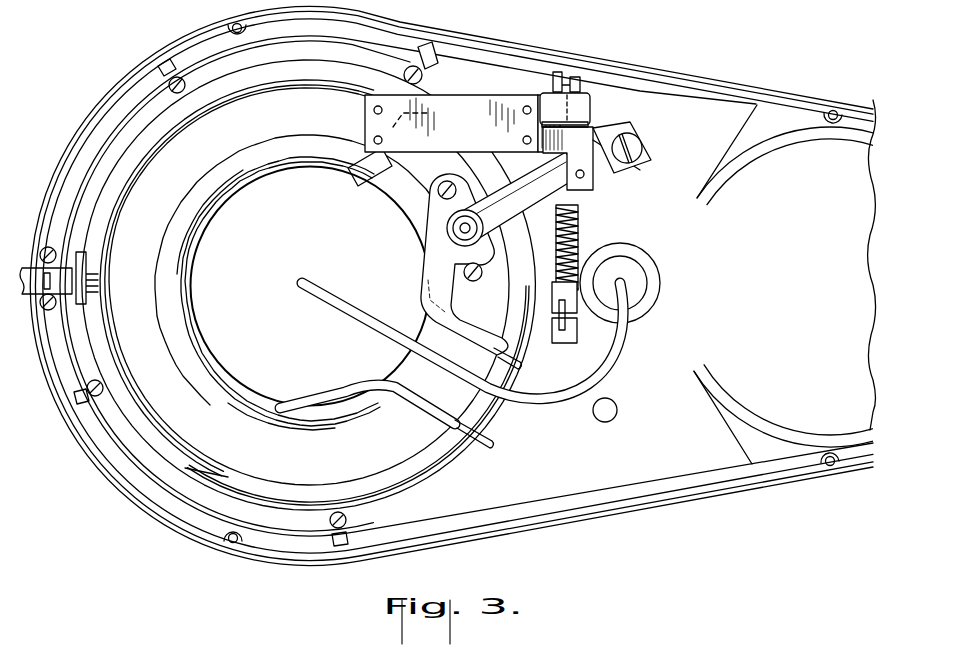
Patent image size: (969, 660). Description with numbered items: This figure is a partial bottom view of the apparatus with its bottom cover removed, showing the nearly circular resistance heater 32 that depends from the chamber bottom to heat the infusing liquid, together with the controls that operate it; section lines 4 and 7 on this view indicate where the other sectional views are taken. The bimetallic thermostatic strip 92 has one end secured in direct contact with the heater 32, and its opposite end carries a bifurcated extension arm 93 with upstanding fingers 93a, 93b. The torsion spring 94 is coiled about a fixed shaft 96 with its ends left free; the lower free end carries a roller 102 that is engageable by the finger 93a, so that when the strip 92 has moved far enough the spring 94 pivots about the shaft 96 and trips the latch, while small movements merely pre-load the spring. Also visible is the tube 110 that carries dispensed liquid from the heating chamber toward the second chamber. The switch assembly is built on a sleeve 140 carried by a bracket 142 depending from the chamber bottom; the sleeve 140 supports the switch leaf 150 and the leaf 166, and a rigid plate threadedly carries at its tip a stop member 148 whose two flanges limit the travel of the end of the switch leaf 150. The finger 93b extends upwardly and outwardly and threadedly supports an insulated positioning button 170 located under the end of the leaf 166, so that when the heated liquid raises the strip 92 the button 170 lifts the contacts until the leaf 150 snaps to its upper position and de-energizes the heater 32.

The section line 4- 4 is at (607, 93).
The section line 7- 7 is at (657, 134).
The resistance heater 32 is at (194, 227).
The bimetallic thermostatic strip 92 is at (482, 138).
The bifurcated extension arm 93 is at (549, 92).
The finger 93a is at (583, 93).
The finger 93b is at (607, 170).
The torsion spring 94 is at (567, 253).
The fixed shaft 96 is at (590, 325).
The roller 102 is at (600, 93).
The tube 110 is at (550, 397).
The sleeve 140 is at (460, 229).
The bracket 142 is at (455, 268).
The stop member 148 is at (641, 150).
The switch leaf 150 is at (617, 173).
The leaf 166 is at (542, 217).
The insulated positioning button 170 is at (581, 179).